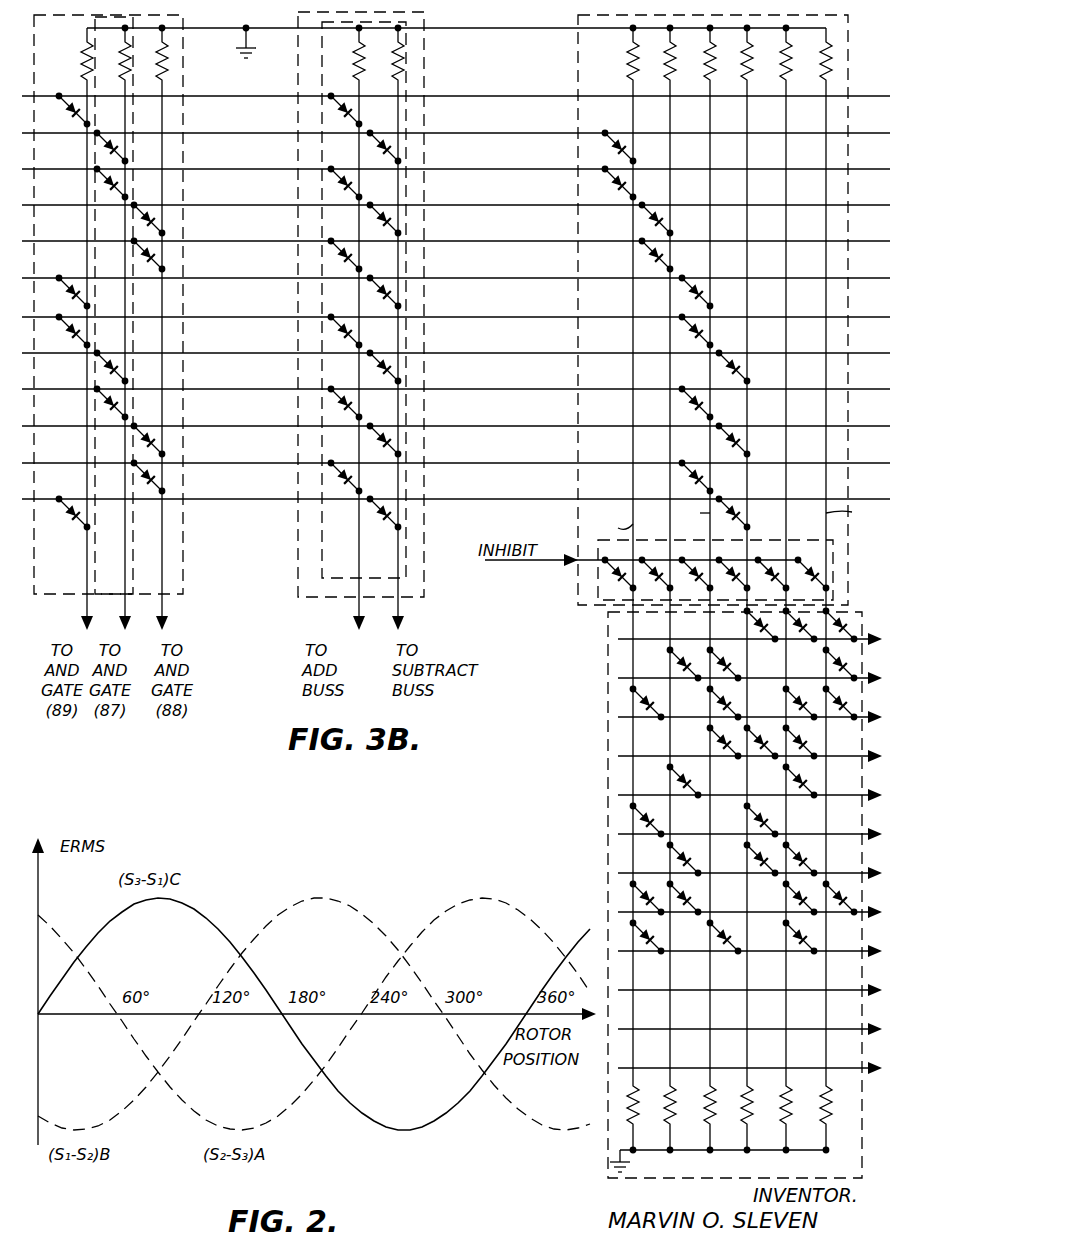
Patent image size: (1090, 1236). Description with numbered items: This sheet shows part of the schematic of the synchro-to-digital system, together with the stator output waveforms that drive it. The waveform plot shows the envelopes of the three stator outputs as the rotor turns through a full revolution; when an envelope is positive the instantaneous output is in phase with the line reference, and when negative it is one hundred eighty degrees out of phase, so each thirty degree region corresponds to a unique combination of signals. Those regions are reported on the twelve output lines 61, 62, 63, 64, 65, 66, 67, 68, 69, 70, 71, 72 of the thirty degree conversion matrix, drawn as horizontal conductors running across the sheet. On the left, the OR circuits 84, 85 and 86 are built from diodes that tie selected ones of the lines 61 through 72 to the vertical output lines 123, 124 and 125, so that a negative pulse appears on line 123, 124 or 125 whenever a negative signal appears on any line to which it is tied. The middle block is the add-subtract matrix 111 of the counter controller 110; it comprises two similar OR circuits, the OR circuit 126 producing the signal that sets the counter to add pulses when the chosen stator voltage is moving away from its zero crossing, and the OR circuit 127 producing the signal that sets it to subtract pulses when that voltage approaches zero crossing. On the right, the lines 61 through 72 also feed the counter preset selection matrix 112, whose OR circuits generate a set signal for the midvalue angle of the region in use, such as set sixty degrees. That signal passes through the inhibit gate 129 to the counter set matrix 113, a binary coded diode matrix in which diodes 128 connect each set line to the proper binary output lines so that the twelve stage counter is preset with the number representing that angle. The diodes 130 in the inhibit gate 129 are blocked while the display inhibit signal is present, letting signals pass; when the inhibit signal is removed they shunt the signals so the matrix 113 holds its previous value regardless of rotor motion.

The output line 61 is at (456, 84).
The output line 62 is at (456, 121).
The output line 63 is at (456, 157).
The output line 64 is at (456, 193).
The output line 65 is at (456, 229).
The output line 66 is at (456, 266).
The output line 67 is at (456, 305).
The output line 68 is at (456, 341).
The output line 69 is at (456, 377).
The output line 70 is at (456, 414).
The output line 71 is at (456, 451).
The output line 72 is at (456, 487).
The OR circuit 84 is at (108, 598).
The OR circuit 85 is at (183, 58).
The OR circuit 86 is at (73, 598).
The counter controller 110 is at (456, 33).
The add-subtract matrix 111 is at (424, 48).
The counter preset selection matrix 112 is at (848, 48).
The counter set matrix 113 is at (607, 737).
The output line 123 is at (124, 558).
The output line 124 is at (163, 530).
The output line 125 is at (86, 540).
The OR circuit 126 is at (322, 80).
The OR circuit 127 is at (407, 72).
The diodes 128 is at (645, 704).
The inhibit gate 129 is at (598, 570).
The diodes 130 is at (620, 573).